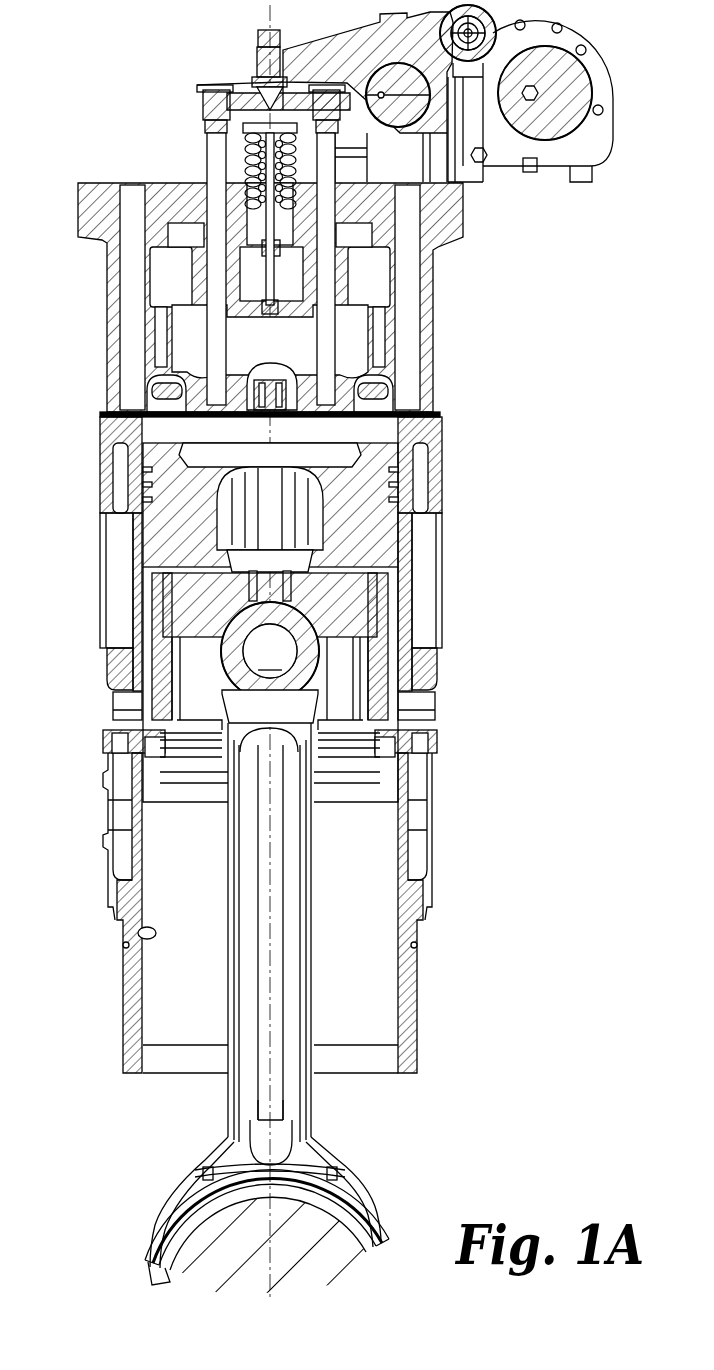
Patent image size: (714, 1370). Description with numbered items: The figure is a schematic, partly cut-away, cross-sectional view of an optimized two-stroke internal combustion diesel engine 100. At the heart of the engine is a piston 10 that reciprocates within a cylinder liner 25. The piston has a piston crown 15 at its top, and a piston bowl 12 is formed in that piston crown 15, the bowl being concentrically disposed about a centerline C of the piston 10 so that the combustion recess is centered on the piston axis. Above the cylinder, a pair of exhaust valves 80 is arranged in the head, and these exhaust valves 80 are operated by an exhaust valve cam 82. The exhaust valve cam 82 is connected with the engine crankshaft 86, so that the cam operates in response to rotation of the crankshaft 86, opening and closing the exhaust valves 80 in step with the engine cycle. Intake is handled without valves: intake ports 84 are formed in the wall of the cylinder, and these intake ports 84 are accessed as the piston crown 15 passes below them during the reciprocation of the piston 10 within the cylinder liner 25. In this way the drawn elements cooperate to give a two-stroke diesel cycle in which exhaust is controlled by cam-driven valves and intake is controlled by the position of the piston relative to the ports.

The optimized two-stroke diesel engine 100 is at (562, 503).
The piston 10 is at (130, 553).
The piston bowl 12 is at (355, 435).
The piston crown 15 is at (157, 428).
The cylinder liner 25 is at (123, 942).
The exhaust valves 80 is at (360, 388).
The exhaust valve cam 82 is at (537, 140).
The intake ports 84 is at (412, 698).
The engine crankshaft 86 is at (177, 1252).
The centerline of the piston C is at (283, 333).